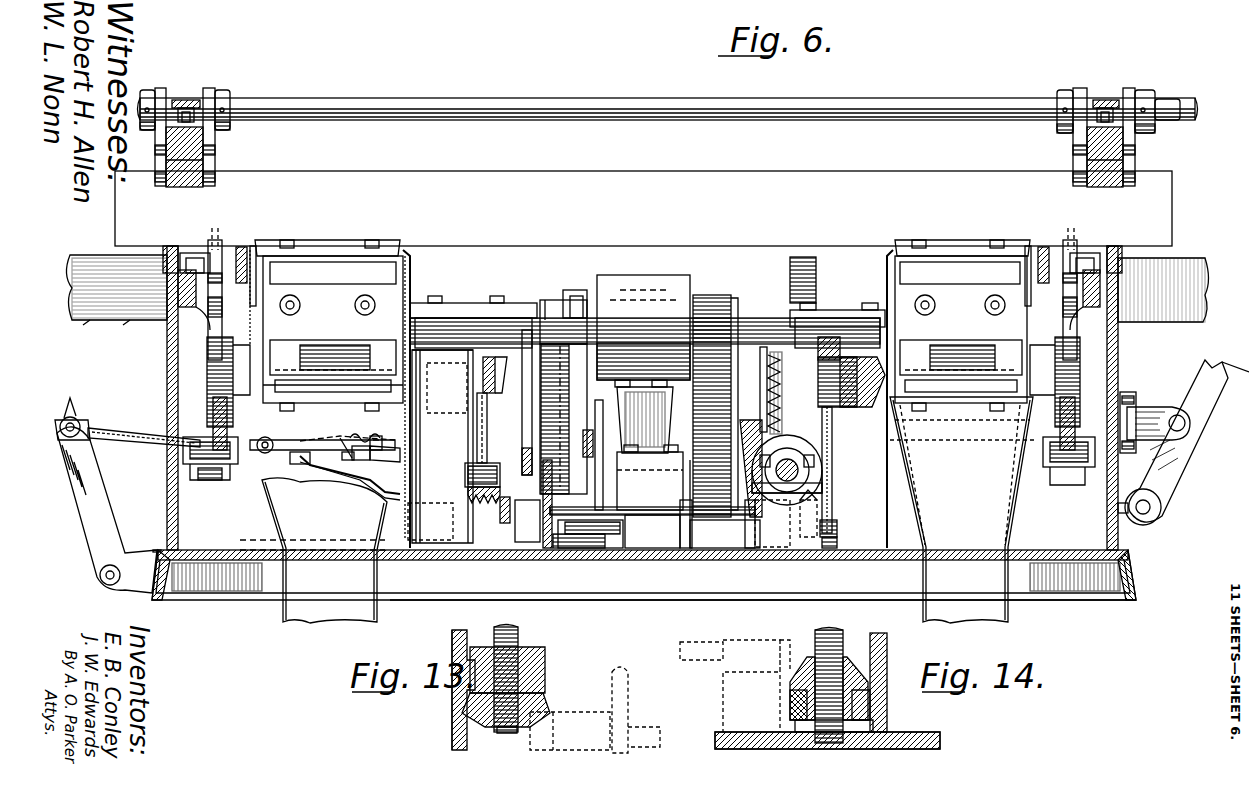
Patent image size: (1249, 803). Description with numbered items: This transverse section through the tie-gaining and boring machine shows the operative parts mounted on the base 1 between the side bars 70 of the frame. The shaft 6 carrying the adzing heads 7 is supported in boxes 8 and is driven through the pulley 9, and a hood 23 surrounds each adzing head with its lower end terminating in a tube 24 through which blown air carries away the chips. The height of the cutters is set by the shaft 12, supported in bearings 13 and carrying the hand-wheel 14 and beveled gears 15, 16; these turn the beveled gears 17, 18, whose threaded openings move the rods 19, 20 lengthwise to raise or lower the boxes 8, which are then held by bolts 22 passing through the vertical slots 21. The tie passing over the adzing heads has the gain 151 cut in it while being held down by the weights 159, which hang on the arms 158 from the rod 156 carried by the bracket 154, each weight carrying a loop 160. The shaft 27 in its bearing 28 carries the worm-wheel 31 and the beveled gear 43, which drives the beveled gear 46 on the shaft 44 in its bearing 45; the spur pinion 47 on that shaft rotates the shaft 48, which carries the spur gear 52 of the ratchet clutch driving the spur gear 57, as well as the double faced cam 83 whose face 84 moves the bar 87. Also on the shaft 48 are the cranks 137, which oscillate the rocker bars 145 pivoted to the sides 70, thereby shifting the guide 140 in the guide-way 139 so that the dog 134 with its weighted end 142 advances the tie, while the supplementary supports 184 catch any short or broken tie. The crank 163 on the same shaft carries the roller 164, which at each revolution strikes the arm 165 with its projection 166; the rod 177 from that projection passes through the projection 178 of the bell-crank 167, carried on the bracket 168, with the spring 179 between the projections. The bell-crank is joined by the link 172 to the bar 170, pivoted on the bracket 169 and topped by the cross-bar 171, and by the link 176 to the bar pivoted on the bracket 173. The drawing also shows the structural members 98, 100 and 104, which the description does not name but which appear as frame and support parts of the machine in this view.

In FIG. 6, the base 1 is at (1090, 600).
In FIG. 6, the shaft 6 is at (545, 300).
In FIG. 6, the adzing heads 7 is at (645, 325).
In FIG. 6, the boxes 8 is at (465, 303).
In FIG. 6, the pulley 9 is at (643, 331).
In FIG. 6, the shaft 12 is at (648, 560).
In FIG. 13, the shaft 12 is at (648, 727).
In FIG. 14, the shaft 12 is at (697, 642).
In FIG. 6, the bearings 13 is at (770, 570).
In FIG. 13, the bearings 13 is at (580, 712).
In FIG. 14, the bearings 13 is at (756, 686).
In FIG. 6, the hand-wheel 14 is at (546, 548).
In FIG. 13, the hand-wheel 14 is at (615, 670).
In FIG. 6, the beveled gear 15 is at (495, 505).
In FIG. 6, the beveled gear 16 is at (808, 537).
In FIG. 14, the beveled gear 16 is at (798, 640).
In FIG. 6, the beveled gear 17 is at (468, 487).
In FIG. 13, the beveled gear 17 is at (525, 662).
In FIG. 6, the beveled gear 18 is at (838, 548).
In FIG. 14, the beveled gear 18 is at (852, 660).
In FIG. 6, the rod 19 is at (484, 428).
In FIG. 13, the rod 19 is at (505, 627).
In FIG. 6, the rod 20 is at (832, 440).
In FIG. 14, the rod 20 is at (832, 630).
In FIG. 6, the vertical slots 21 is at (848, 357).
In FIG. 6, the bolts 22 is at (490, 357).
In FIG. 6, the hood 23 is at (410, 258).
In FIG. 6, the tubes 24 is at (330, 622).
In FIG. 6, the shaft 27 is at (798, 470).
In FIG. 6, the bearing 28 is at (822, 478).
In FIG. 6, the worm-wheel 31 is at (763, 347).
In FIG. 6, the beveled gear 43 is at (805, 460).
In FIG. 6, the shaft 44 is at (690, 548).
In FIG. 6, the bearing 45 is at (632, 535).
In FIG. 6, the beveled gear 46 is at (750, 530).
In FIG. 6, the spur pinion 47 is at (745, 500).
In FIG. 6, the shaft 48 is at (580, 390).
In FIG. 6, the spur gear 52 is at (776, 352).
In FIG. 6, the spur gear 57 is at (805, 257).
In FIG. 6, the side bars 70 is at (172, 246).
In FIG. 6, the double faced cam 83 is at (575, 290).
In FIG. 6, the cam face 84 is at (563, 419).
In FIG. 6, the bar 87 is at (522, 440).
In FIG. 6, the plate 98 is at (592, 171).
In FIG. 6, the bearing 100 is at (592, 548).
In FIG. 6, the bracket 104 is at (595, 438).
In FIG. 6, the dog 134 is at (240, 247).
In FIG. 6, the cranks 137 is at (240, 385).
In FIG. 6, the guide-way 139 is at (178, 290).
In FIG. 6, the guide 140 is at (198, 253).
In FIG. 6, the weighted end 142 is at (216, 300).
In FIG. 6, the rocker bars 145 is at (185, 450).
In FIG. 6, the gain 151 is at (335, 240).
In FIG. 6, the bracket 154 is at (115, 320).
In FIG. 6, the rod 156 is at (475, 98).
In FIG. 6, the arms 158 is at (163, 90).
In FIG. 6, the weights 159 is at (205, 152).
In FIG. 6, the loop 160 is at (186, 100).
In FIG. 6, the crank 163 is at (425, 303).
In FIG. 6, the roller 164 is at (422, 440).
In FIG. 6, the arm 165 is at (413, 521).
In FIG. 6, the projection 166 is at (380, 460).
In FIG. 6, the bell-crank 167 is at (335, 440).
In FIG. 6, the bracket 168 is at (322, 470).
In FIG. 6, the bracket 169 is at (122, 590).
In FIG. 6, the bar 170 is at (108, 520).
In FIG. 6, the cross-bar 171 is at (1236, 390).
In FIG. 6, the link 172 is at (135, 423).
In FIG. 6, the bracket 173 is at (1190, 423).
In FIG. 6, the link 176 is at (1128, 513).
In FIG. 6, the rod 177 is at (382, 431).
In FIG. 6, the projection 178 is at (355, 438).
In FIG. 6, the spring 179 is at (344, 452).
In FIG. 6, the supplementary supports 184 is at (252, 246).